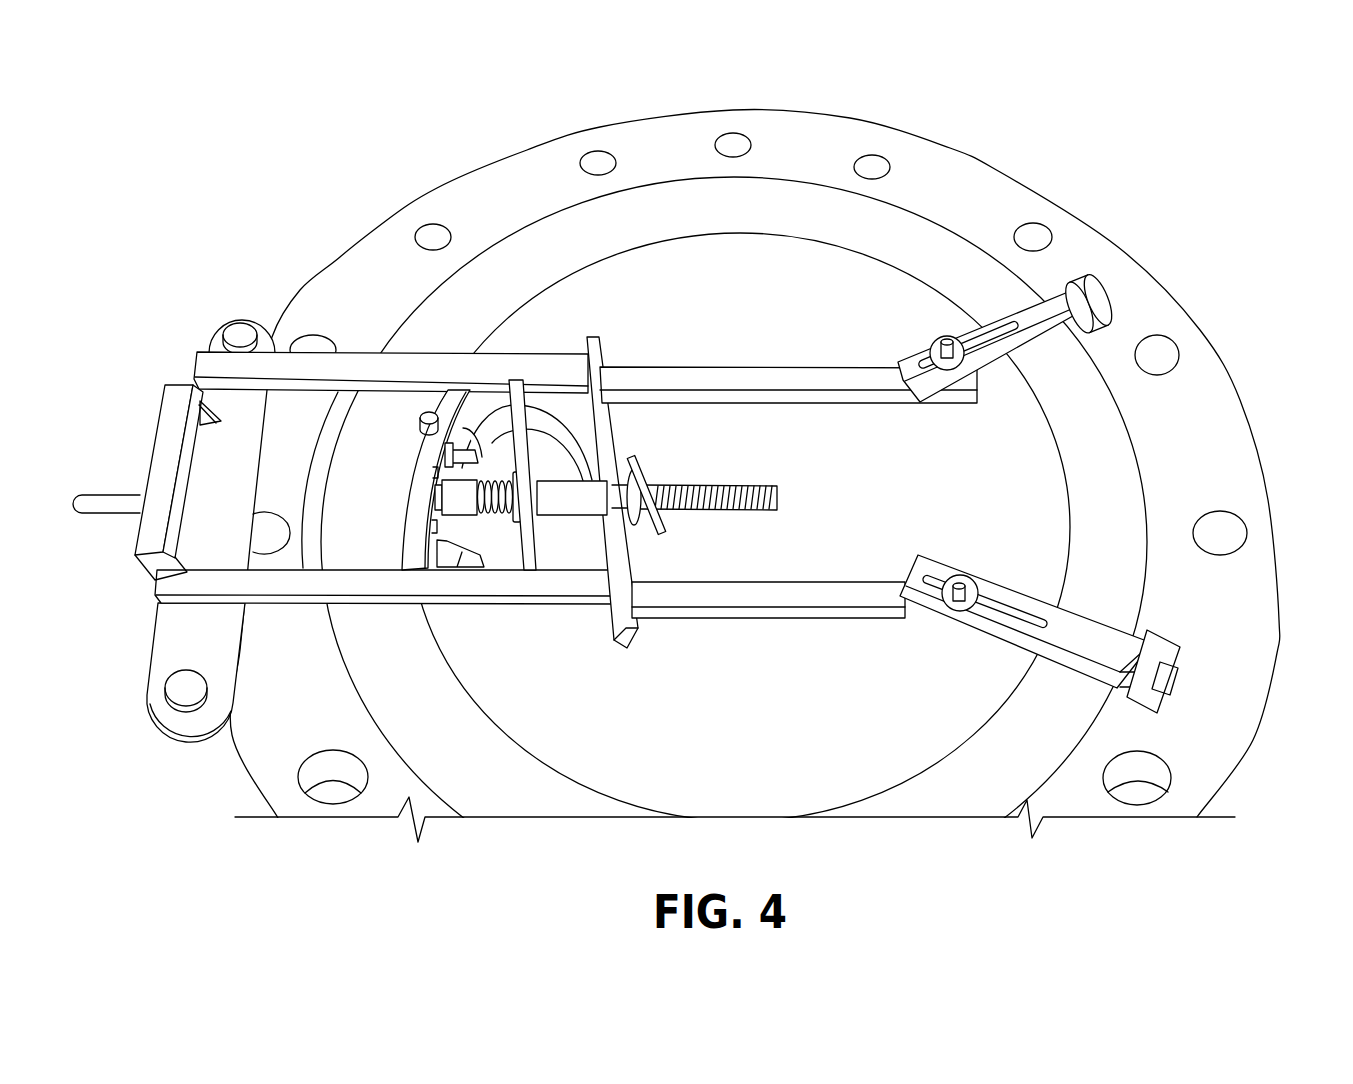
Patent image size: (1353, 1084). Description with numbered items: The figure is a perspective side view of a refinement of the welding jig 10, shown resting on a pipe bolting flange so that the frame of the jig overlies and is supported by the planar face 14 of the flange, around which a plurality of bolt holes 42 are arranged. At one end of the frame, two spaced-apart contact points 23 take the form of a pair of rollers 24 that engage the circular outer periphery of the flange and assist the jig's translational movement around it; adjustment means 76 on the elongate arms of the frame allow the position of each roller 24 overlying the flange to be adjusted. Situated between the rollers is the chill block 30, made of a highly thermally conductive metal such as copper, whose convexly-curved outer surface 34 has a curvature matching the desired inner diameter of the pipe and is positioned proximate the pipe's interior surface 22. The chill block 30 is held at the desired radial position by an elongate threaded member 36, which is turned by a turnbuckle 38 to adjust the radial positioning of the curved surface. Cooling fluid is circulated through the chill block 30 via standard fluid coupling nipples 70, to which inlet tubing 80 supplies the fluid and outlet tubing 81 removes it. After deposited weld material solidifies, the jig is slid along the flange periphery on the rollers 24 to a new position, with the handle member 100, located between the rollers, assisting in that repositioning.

The welding jig 10 is at (417, 363).
The planar face 14 is at (1042, 765).
The interior surface 22 is at (543, 763).
The contact points 23 is at (242, 330).
The rollers 24 is at (1100, 313).
The chill block 30 is at (413, 533).
The convexly-curved outer surface 34 is at (402, 513).
The elongate threaded member 36 is at (712, 483).
The turnbuckle 38 is at (653, 480).
The bolt holes 42 is at (1158, 357).
The fluid coupling nipples 70 is at (467, 393).
The adjustment means 76 is at (958, 335).
The inlet tubing 80 is at (550, 423).
The outlet tubing 81 is at (492, 565).
The handle member 100 is at (122, 493).